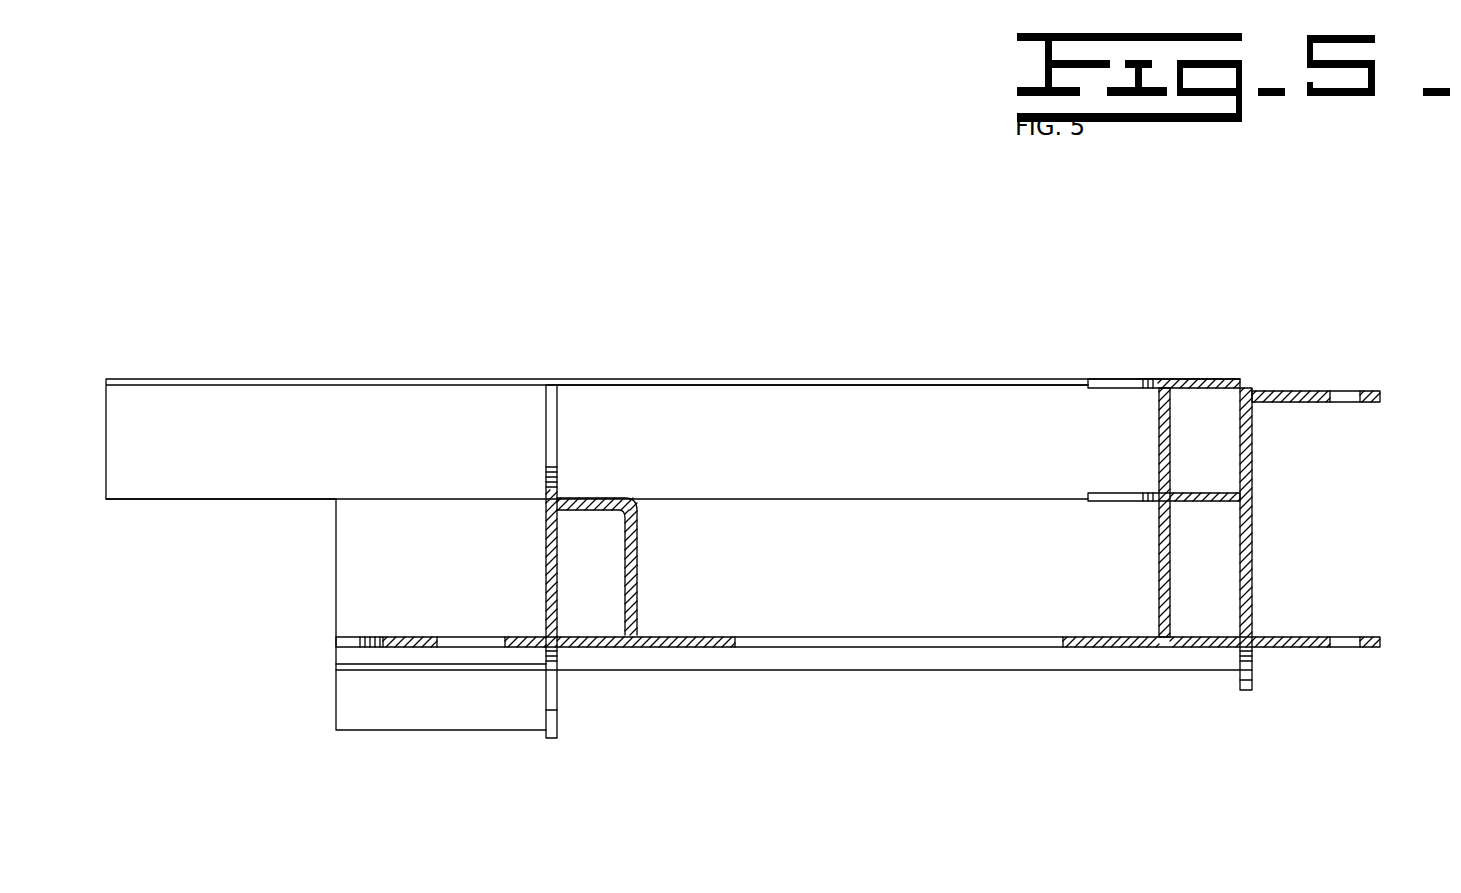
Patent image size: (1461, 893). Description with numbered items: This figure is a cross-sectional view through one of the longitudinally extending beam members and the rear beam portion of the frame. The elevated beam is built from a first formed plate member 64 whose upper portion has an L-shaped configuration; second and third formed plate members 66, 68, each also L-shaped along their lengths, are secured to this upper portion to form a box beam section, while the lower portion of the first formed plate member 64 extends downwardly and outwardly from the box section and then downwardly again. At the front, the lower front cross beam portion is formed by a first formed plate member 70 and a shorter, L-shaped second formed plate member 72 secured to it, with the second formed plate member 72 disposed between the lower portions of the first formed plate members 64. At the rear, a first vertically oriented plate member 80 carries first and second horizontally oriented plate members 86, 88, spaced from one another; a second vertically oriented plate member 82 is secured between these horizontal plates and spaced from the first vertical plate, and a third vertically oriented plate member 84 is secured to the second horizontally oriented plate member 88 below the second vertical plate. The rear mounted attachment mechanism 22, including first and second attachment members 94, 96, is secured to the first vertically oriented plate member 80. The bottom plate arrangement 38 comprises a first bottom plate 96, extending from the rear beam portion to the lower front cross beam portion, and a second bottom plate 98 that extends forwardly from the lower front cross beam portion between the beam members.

The rear mounted attachment mechanism 22 is at (1368, 684).
The bottom plate arrangement 38 is at (953, 715).
The first formed plate member 64 is at (200, 381).
The second formed plate member 66 is at (963, 478).
The third formed plate member 68 is at (212, 471).
The first formed plate member 70 is at (557, 545).
The second formed plate member 72 is at (637, 537).
The first vertically oriented plate member 80 is at (1252, 500).
The second vertically oriented plate member 82 is at (1160, 407).
The third vertically oriented plate member 84 is at (1158, 543).
The first horizontally oriented plate member 86 is at (1198, 382).
The second horizontally oriented plate member 88 is at (1203, 496).
The first attachment member 94 is at (1300, 402).
The first bottom plate 96 is at (683, 648).
The second bottom plate 98 is at (385, 646).